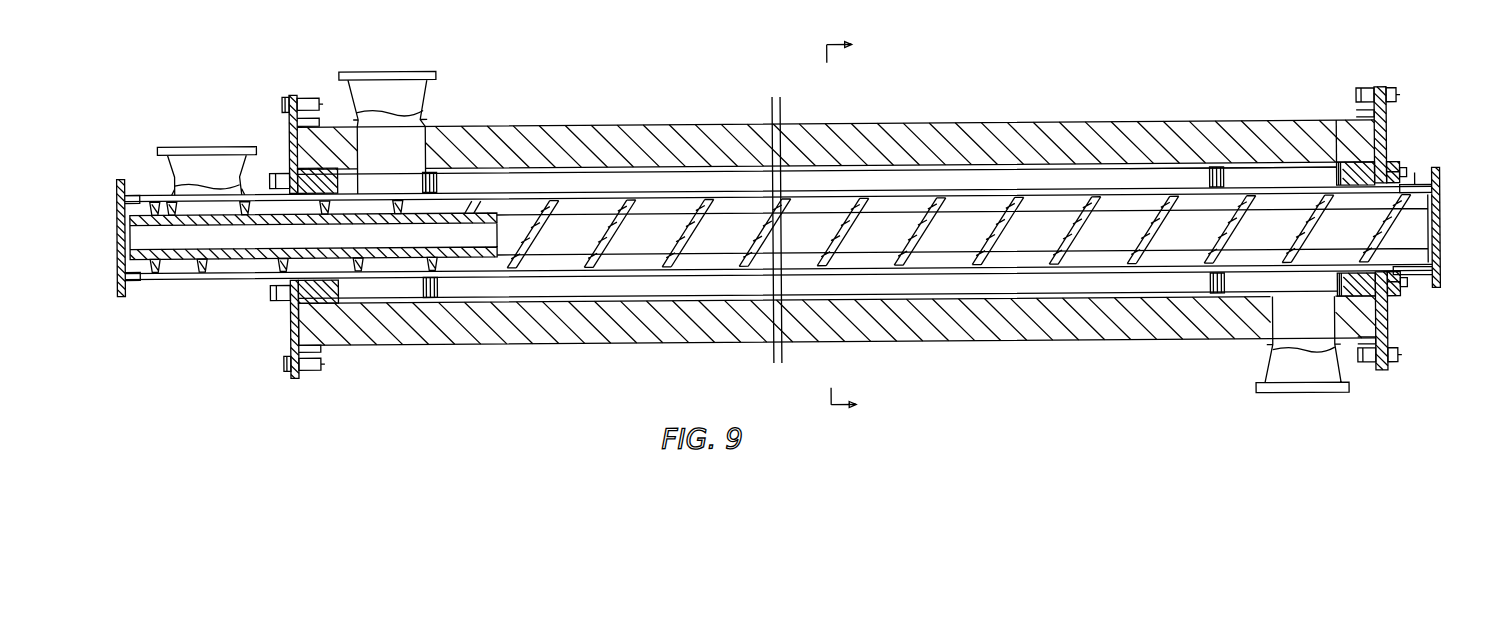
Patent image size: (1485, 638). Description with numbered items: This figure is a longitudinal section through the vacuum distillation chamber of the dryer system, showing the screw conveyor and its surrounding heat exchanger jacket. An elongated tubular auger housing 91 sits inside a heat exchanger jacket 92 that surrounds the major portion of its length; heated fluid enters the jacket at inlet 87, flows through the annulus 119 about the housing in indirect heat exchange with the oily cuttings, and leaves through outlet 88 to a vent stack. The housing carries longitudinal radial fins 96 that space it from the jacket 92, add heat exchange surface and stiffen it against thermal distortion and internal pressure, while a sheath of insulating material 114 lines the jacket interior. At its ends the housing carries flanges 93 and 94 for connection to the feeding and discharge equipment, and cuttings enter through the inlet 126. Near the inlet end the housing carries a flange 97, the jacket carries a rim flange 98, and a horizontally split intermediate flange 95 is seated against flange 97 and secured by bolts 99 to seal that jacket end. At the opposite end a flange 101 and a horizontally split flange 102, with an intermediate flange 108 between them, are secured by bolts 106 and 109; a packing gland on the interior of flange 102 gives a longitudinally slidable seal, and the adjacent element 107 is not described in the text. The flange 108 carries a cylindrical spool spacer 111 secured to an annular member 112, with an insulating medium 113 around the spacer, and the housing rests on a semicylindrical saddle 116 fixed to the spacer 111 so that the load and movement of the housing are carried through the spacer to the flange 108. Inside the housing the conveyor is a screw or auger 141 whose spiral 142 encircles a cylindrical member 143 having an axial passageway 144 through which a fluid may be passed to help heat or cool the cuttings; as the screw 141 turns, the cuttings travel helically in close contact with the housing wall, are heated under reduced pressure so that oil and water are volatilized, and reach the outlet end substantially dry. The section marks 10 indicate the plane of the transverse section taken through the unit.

The section line 10- 10 is at (857, 224).
The inlet 87 is at (1265, 371).
The outlet 88 is at (427, 96).
The auger housing 91 is at (917, 276).
The heat exchanger jacket 92 is at (908, 122).
The flange 93 is at (1441, 266).
The flange 94 is at (120, 175).
The intermediate flange 95 is at (292, 334).
The radial fins 96 is at (1162, 180).
The flange 97 is at (282, 287).
The rim flange 98 is at (296, 92).
The bolts 99 is at (312, 92).
The flange 101 is at (1375, 91).
The split flange 102 is at (1402, 172).
The bolts 106 is at (1398, 104).
The gland ring 107 is at (1394, 165).
The intermediate flange 108 is at (1386, 100).
The bolts 109 is at (1395, 294).
The cylindrical spacer 111 is at (1358, 143).
The annular member 112 is at (1335, 177).
The insulating medium 113 is at (1360, 166).
The sheath of insulating material 114 is at (637, 136).
The semicylindrical saddle 116 is at (1337, 279).
The annulus 119 is at (390, 290).
The inlet 126 is at (217, 143).
The screw 141 is at (1020, 236).
The spiral 142 is at (613, 232).
The cylindrical member 143 is at (1100, 239).
The axial passageway 144 is at (190, 234).